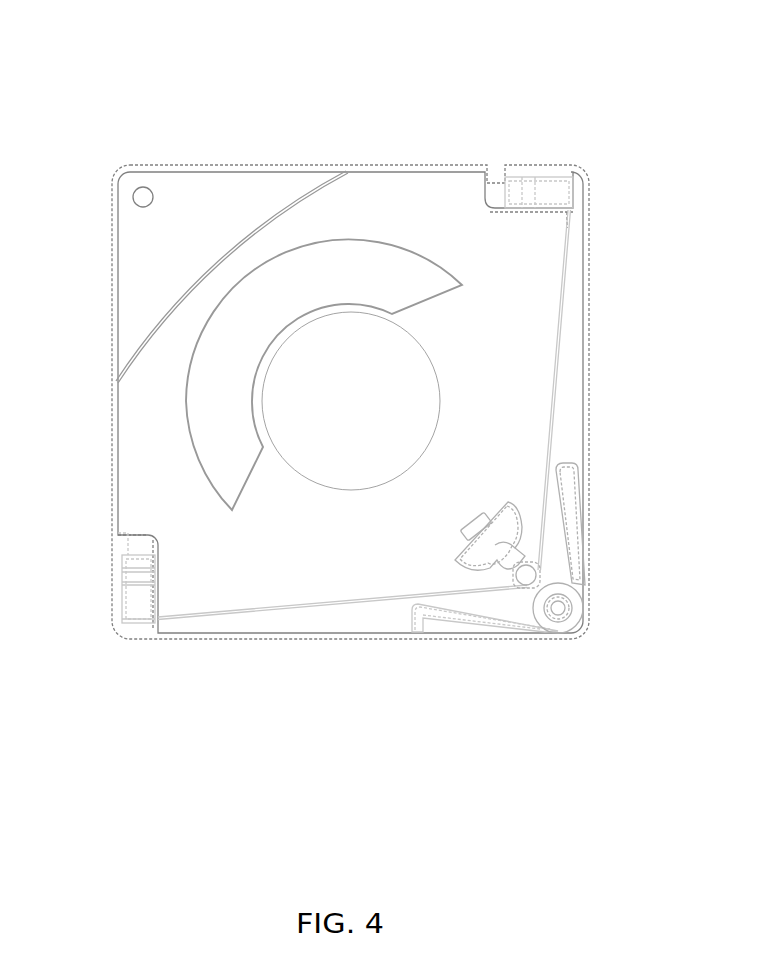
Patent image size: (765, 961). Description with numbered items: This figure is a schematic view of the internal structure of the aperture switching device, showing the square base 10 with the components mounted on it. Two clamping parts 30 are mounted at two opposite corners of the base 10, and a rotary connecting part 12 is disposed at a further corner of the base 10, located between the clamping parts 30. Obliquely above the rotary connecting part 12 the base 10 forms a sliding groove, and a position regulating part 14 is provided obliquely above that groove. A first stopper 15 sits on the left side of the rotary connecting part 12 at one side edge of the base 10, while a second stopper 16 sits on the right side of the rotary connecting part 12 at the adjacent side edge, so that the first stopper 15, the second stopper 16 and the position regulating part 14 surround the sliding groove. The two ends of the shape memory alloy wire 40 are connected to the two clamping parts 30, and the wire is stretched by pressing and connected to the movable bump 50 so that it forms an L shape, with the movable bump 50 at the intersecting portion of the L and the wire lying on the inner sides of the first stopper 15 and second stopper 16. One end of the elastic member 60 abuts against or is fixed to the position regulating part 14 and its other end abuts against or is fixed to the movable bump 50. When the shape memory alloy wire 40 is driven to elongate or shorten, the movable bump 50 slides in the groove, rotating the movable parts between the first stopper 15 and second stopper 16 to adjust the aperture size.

The base 10 is at (418, 183).
The rotary connecting part 12 is at (564, 607).
The position regulating part 14 is at (471, 525).
The first stopper 15 is at (440, 620).
The second stopper 16 is at (573, 530).
The clamping part 30 is at (537, 190).
The shape memory alloy wire 40 is at (312, 607).
The movable bump 50 is at (527, 577).
The elastic member 60 is at (522, 525).